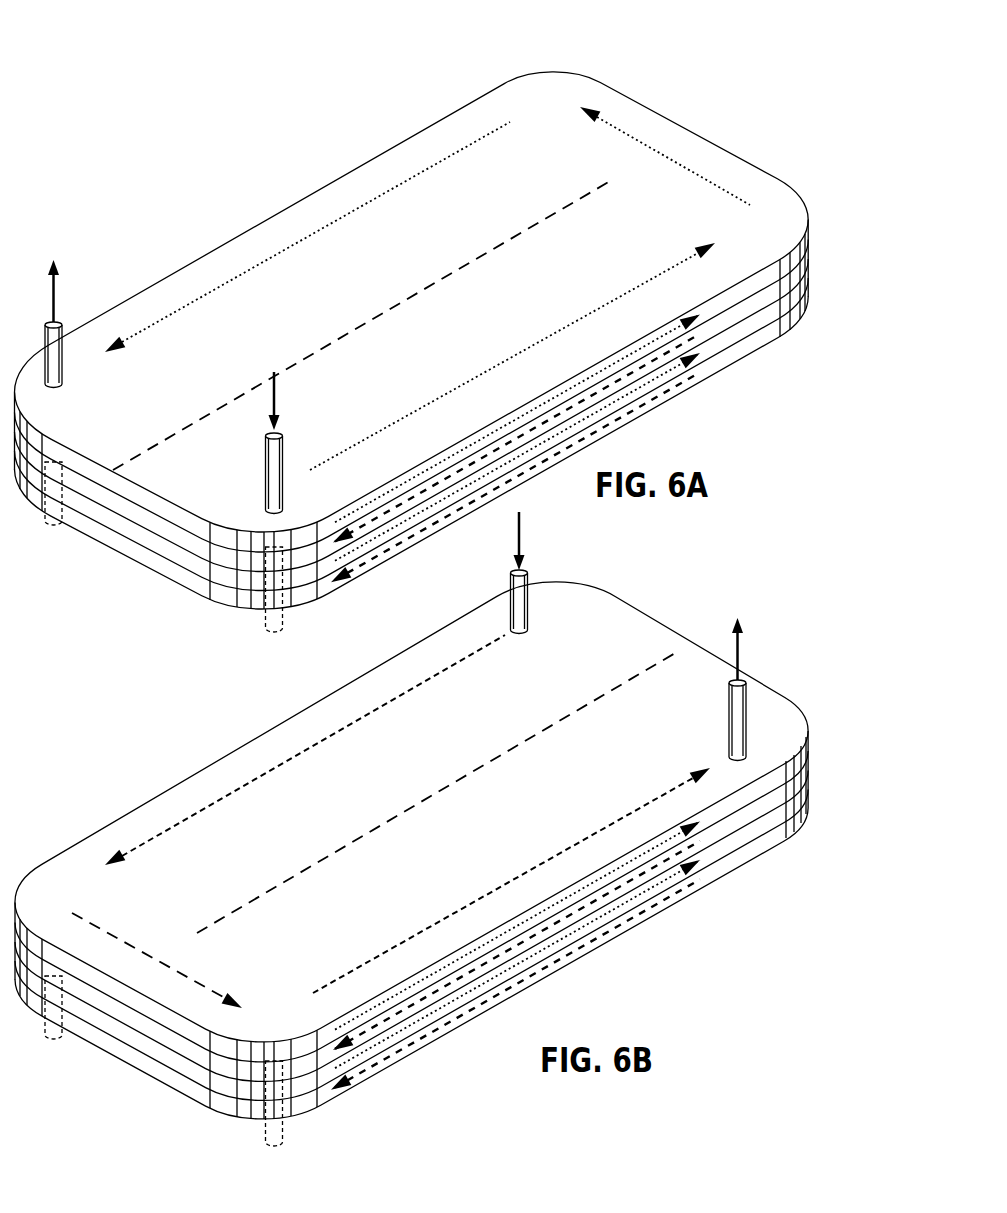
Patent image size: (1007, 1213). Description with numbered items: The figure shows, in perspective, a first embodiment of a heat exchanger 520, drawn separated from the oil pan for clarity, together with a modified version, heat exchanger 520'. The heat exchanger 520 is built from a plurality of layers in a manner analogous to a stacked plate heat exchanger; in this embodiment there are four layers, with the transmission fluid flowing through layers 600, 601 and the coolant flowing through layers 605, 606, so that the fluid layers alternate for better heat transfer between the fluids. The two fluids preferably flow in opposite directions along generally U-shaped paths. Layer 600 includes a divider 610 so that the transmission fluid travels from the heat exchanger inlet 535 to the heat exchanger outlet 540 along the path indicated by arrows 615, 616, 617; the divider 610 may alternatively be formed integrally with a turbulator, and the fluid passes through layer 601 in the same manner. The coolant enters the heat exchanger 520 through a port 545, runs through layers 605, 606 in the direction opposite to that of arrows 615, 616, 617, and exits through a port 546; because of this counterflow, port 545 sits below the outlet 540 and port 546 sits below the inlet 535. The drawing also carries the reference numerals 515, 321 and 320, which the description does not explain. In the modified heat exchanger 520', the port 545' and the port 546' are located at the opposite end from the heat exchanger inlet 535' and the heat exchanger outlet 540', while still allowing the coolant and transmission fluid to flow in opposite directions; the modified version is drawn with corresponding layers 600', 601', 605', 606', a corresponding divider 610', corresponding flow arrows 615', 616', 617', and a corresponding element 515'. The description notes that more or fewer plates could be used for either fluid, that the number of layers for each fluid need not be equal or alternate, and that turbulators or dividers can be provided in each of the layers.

In FIG. 6A, the heat exchanger 520 is at (412, 339).
In FIG. 6A, the top surface / cover 515 is at (412, 302).
In FIG. 6A, the arrow 617 is at (306, 239).
In FIG. 6A, the arrow 616 is at (663, 164).
In FIG. 6A, the upward direction arrow 321 is at (56, 300).
In FIG. 6B, the upward direction arrow 321 is at (740, 645).
In FIG. 6A, the heat exchanger outlet 540 is at (91, 366).
In FIG. 6A, the downward direction arrow 320 is at (278, 398).
In FIG. 6B, the downward direction arrow 320 is at (522, 543).
In FIG. 6A, the heat exchanger inlet 535 is at (309, 469).
In FIG. 6A, the arrow 615 is at (514, 354).
In FIG. 6A, the divider 610 is at (362, 325).
In FIG. 6A, the layer 600 is at (415, 395).
In FIG. 6A, the layer 605 is at (412, 415).
In FIG. 6A, the layer 601 is at (412, 434).
In FIG. 6A, the layer 606 is at (412, 452).
In FIG. 6A, the port 545 is at (41, 526).
In FIG. 6A, the port 546 is at (236, 598).
In FIG. 6B, the heat exchanger 520' is at (411, 838).
In FIG. 6B, the top surface / cover (alternate) 515' is at (411, 812).
In FIG. 6B, the first signal path (alternate) 617' is at (303, 752).
In FIG. 6B, the transverse signal path (alternate) 616' is at (158, 957).
In FIG. 6B, the heat exchanger outlet 540' is at (699, 720).
In FIG. 6B, the heat exchanger inlet 535' is at (562, 607).
In FIG. 6B, the second signal path (alternate) 615' is at (513, 878).
In FIG. 6B, the third signal path (alternate) 610' is at (437, 792).
In FIG. 6B, the first layer (alternate) 600' is at (417, 906).
In FIG. 6B, the second layer (alternate) 605' is at (411, 926).
In FIG. 6B, the third layer (alternate) 601' is at (411, 945).
In FIG. 6B, the fourth layer (alternate) 606' is at (411, 963).
In FIG. 6B, the port 545' is at (41, 1039).
In FIG. 6B, the port 546' is at (236, 1109).